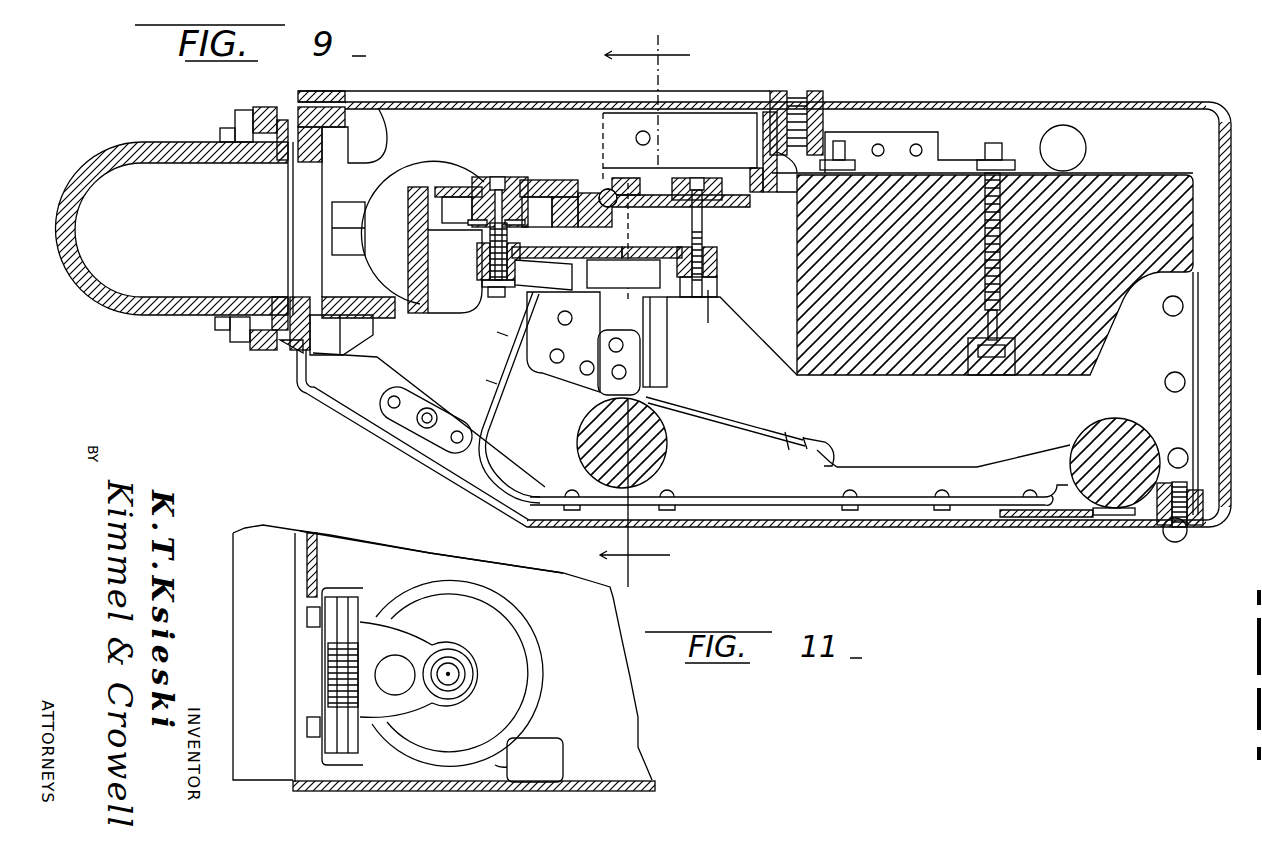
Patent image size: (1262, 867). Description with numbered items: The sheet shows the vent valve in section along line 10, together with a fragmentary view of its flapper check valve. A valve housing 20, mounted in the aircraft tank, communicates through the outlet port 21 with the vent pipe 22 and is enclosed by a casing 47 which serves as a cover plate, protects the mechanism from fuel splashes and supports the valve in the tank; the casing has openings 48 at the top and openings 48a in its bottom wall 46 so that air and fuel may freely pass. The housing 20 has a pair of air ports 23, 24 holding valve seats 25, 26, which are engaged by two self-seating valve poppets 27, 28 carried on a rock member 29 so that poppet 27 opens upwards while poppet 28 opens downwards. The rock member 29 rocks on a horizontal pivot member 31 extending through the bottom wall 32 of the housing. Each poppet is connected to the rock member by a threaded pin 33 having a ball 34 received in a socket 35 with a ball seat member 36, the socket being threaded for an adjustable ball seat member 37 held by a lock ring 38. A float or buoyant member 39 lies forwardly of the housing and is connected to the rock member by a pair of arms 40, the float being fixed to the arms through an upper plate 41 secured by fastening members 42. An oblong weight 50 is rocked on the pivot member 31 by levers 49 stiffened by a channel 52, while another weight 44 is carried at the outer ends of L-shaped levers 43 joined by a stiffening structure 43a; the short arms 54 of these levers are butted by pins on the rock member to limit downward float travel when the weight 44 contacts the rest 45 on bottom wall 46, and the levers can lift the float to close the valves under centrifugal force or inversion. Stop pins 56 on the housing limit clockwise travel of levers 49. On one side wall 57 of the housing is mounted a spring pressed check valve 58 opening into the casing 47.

In FIG. 9, the section line 10 is at (659, 311).
In FIG. 9, the valve housing 20 is at (775, 95).
In FIG. 9, the outlet port 21 is at (305, 243).
In FIG. 9, the vent pipe 22 is at (167, 315).
In FIG. 9, the air port 23 is at (430, 302).
In FIG. 9, the air port 24 is at (733, 195).
In FIG. 9, the valve seat 25 is at (453, 185).
In FIG. 9, the valve seat 26 is at (743, 170).
In FIG. 9, the valve poppet 27 is at (543, 180).
In FIG. 9, the valve poppet 28 is at (750, 205).
In FIG. 9, the rock member 29 is at (634, 267).
In FIG. 9, the pivot member 31 is at (603, 193).
In FIG. 9, the bottom wall 32 is at (424, 312).
In FIG. 9, the threaded pin 33 is at (447, 272).
In FIG. 9, the ball 34 is at (513, 180).
In FIG. 9, the socket 35 is at (549, 203).
In FIG. 9, the ball seat member 36 is at (488, 180).
In FIG. 9, the adjustable ball seat member 37 is at (470, 212).
In FIG. 9, the lock ring 38 is at (567, 268).
In FIG. 9, the buoyant member 39 is at (885, 360).
In FIG. 9, the arm 40 is at (710, 293).
In FIG. 9, the upper plate 41 is at (948, 172).
In FIG. 9, the fastening member 42 is at (995, 143).
In FIG. 9, the L-shaped lever 43 is at (707, 447).
In FIG. 9, the stiffening structure 43a is at (783, 437).
In FIG. 9, the weight 44 is at (1125, 425).
In FIG. 9, the rest 45 is at (1090, 530).
In FIG. 9, the bottom wall 46 is at (975, 528).
In FIG. 9, the casing 47 is at (928, 535).
In FIG. 9, the opening 48 is at (1082, 148).
In FIG. 9, the opening 48a is at (1045, 530).
In FIG. 9, the lever 49 is at (590, 313).
In FIG. 9, the weight 50 is at (592, 432).
In FIG. 9, the channel 52 is at (588, 345).
In FIG. 9, the short arm 54 is at (533, 300).
In FIG. 9, the stop pin 56 is at (650, 138).
In FIG. 11, the side wall 57 is at (423, 558).
In FIG. 9, the check valve 58 is at (394, 183).
In FIG. 11, the check valve 58 is at (473, 607).